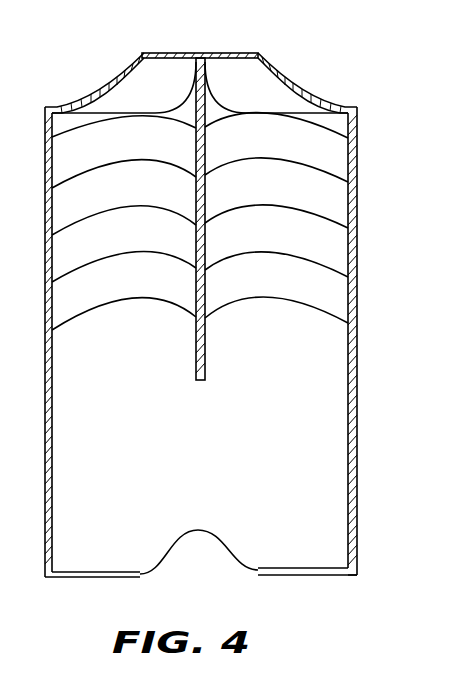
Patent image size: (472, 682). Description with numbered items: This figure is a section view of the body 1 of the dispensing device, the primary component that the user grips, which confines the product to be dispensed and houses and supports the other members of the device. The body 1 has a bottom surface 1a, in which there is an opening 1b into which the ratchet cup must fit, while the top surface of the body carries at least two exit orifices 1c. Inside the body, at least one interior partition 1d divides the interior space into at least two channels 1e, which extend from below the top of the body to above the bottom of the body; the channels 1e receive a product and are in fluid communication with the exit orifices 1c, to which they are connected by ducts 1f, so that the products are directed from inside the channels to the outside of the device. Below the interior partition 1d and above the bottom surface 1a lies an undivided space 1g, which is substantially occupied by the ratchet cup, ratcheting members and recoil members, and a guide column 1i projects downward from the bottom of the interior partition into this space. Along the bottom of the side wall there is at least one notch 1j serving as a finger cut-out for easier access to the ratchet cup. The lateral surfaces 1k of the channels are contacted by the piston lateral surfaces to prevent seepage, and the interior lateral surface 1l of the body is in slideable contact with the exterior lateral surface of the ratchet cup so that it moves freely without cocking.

The body 1 is at (362, 168).
The bottom surface 1a is at (345, 577).
The opening 1b is at (283, 578).
The exit orifices 1c is at (170, 53).
The interior partition 1d is at (205, 132).
The channels 1e is at (131, 238).
The ducts 1f is at (246, 95).
The undivided space 1g is at (191, 453).
The guide column 1i is at (205, 330).
The notch 1j is at (202, 531).
The lateral surfaces of the channels 1k is at (52, 303).
The interior lateral surface 1l is at (52, 459).